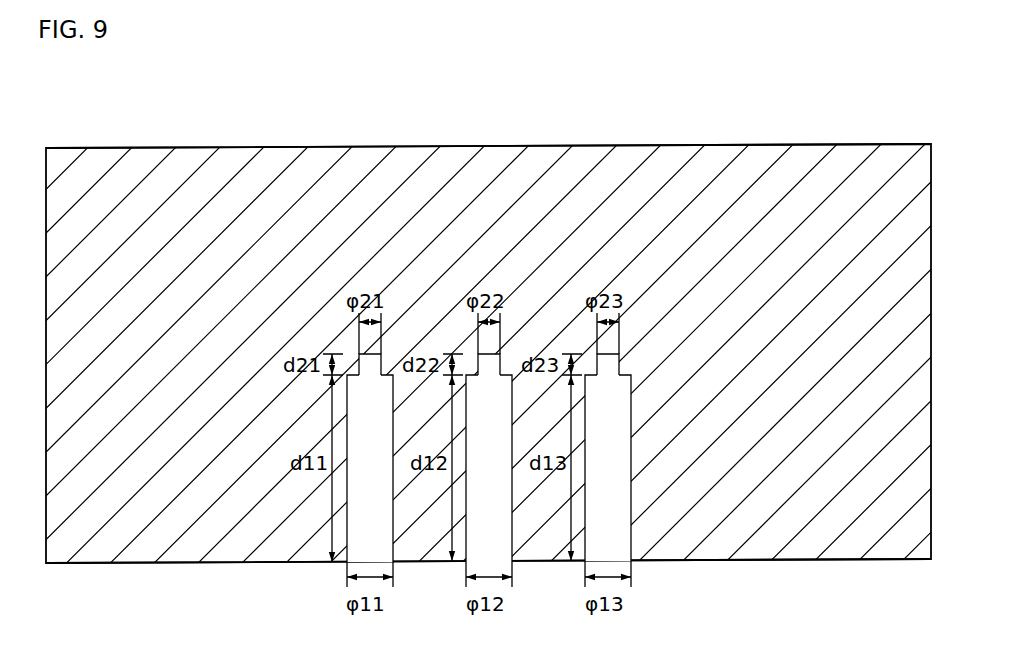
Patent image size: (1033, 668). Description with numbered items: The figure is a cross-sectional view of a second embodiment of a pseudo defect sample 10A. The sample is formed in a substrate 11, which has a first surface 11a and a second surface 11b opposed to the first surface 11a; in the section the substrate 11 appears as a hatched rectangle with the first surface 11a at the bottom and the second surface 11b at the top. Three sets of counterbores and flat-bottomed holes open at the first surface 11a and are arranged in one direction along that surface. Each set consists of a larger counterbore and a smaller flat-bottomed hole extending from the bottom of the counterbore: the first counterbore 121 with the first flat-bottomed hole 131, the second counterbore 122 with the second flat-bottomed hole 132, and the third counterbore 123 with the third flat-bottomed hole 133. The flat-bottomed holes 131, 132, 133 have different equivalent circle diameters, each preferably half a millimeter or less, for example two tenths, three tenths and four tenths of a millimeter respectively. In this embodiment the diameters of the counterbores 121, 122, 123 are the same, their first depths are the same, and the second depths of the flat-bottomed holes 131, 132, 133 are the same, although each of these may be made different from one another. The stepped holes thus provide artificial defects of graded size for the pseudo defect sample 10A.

The pseudo defect sample 10A is at (476, 126).
The substrate 11 is at (212, 176).
The first surface 11a is at (783, 561).
The second surface 11b is at (782, 147).
The first counterbore 121 is at (393, 458).
The second counterbore 122 is at (512, 458).
The third counterbore 123 is at (625, 462).
The first flat-bottomed hole 131 is at (381, 362).
The second flat-bottomed hole 132 is at (500, 362).
The third flat-bottomed hole 133 is at (619, 362).